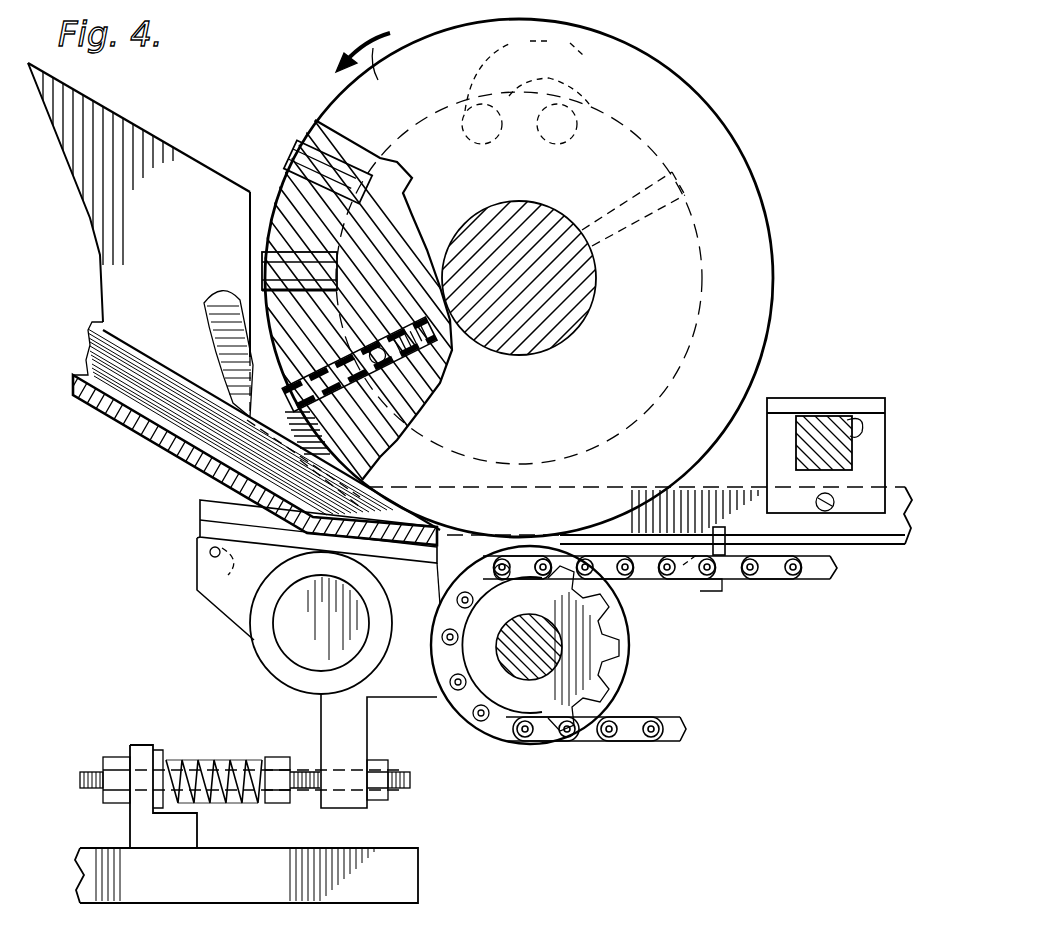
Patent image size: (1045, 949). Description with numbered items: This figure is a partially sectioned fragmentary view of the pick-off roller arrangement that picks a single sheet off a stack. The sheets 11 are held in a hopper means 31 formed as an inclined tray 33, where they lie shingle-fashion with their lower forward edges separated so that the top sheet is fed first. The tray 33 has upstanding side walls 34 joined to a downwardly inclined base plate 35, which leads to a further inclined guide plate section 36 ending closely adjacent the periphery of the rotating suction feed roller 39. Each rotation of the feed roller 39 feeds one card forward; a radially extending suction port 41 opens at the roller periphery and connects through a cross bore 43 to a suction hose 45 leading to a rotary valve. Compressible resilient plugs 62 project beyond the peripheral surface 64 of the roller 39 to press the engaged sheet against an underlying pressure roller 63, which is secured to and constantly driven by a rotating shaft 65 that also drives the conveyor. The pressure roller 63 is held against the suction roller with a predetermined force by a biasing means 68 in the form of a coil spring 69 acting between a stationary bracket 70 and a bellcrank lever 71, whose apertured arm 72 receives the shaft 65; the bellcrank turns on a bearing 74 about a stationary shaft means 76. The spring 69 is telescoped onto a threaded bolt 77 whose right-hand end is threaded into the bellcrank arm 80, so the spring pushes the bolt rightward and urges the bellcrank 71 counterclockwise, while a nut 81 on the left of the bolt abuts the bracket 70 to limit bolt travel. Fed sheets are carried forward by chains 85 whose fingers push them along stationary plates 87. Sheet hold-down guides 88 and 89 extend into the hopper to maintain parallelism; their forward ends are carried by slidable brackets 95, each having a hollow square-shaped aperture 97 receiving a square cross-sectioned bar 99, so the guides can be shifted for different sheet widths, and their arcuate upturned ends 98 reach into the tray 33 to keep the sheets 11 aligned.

The sheets 11 is at (118, 365).
The hopper means 31 is at (185, 110).
The inclined tray 33 is at (80, 250).
The upstanding side walls 34 is at (202, 250).
The base plate 35 is at (156, 430).
The guide plate section 36 is at (413, 535).
The suction feed roller 39 is at (537, 423).
The suction port 41 is at (394, 470).
The cross bore 43 is at (422, 403).
The suction hose 45 is at (614, 53).
The resilient plugs 62 is at (287, 155).
The pressure roller 63 is at (632, 638).
The peripheral surface 64 is at (337, 95).
The rotating shaft 65 is at (520, 676).
The biasing means 68 is at (236, 741).
The coil spring 69 is at (247, 790).
The stationary bracket 70 is at (143, 745).
The bellcrank lever 71 is at (405, 710).
The apertured arm 72 is at (318, 672).
The bearing 74 is at (286, 655).
The stationary shaft means 76 is at (341, 640).
The threaded bolt 77 is at (309, 795).
The bellcrank arm 80 is at (322, 732).
The nut 81 is at (100, 792).
The chains 85 is at (733, 555).
The stationary plates 87 is at (878, 548).
The sheet hold-down guide 88 is at (714, 490).
The sheet hold-down guide 89 is at (612, 658).
The slidable brackets 95 is at (823, 434).
The square-shaped aperture 97 is at (866, 418).
The arcuate upturned ends 98 is at (214, 306).
The square cross-sectioned bar 99 is at (822, 432).